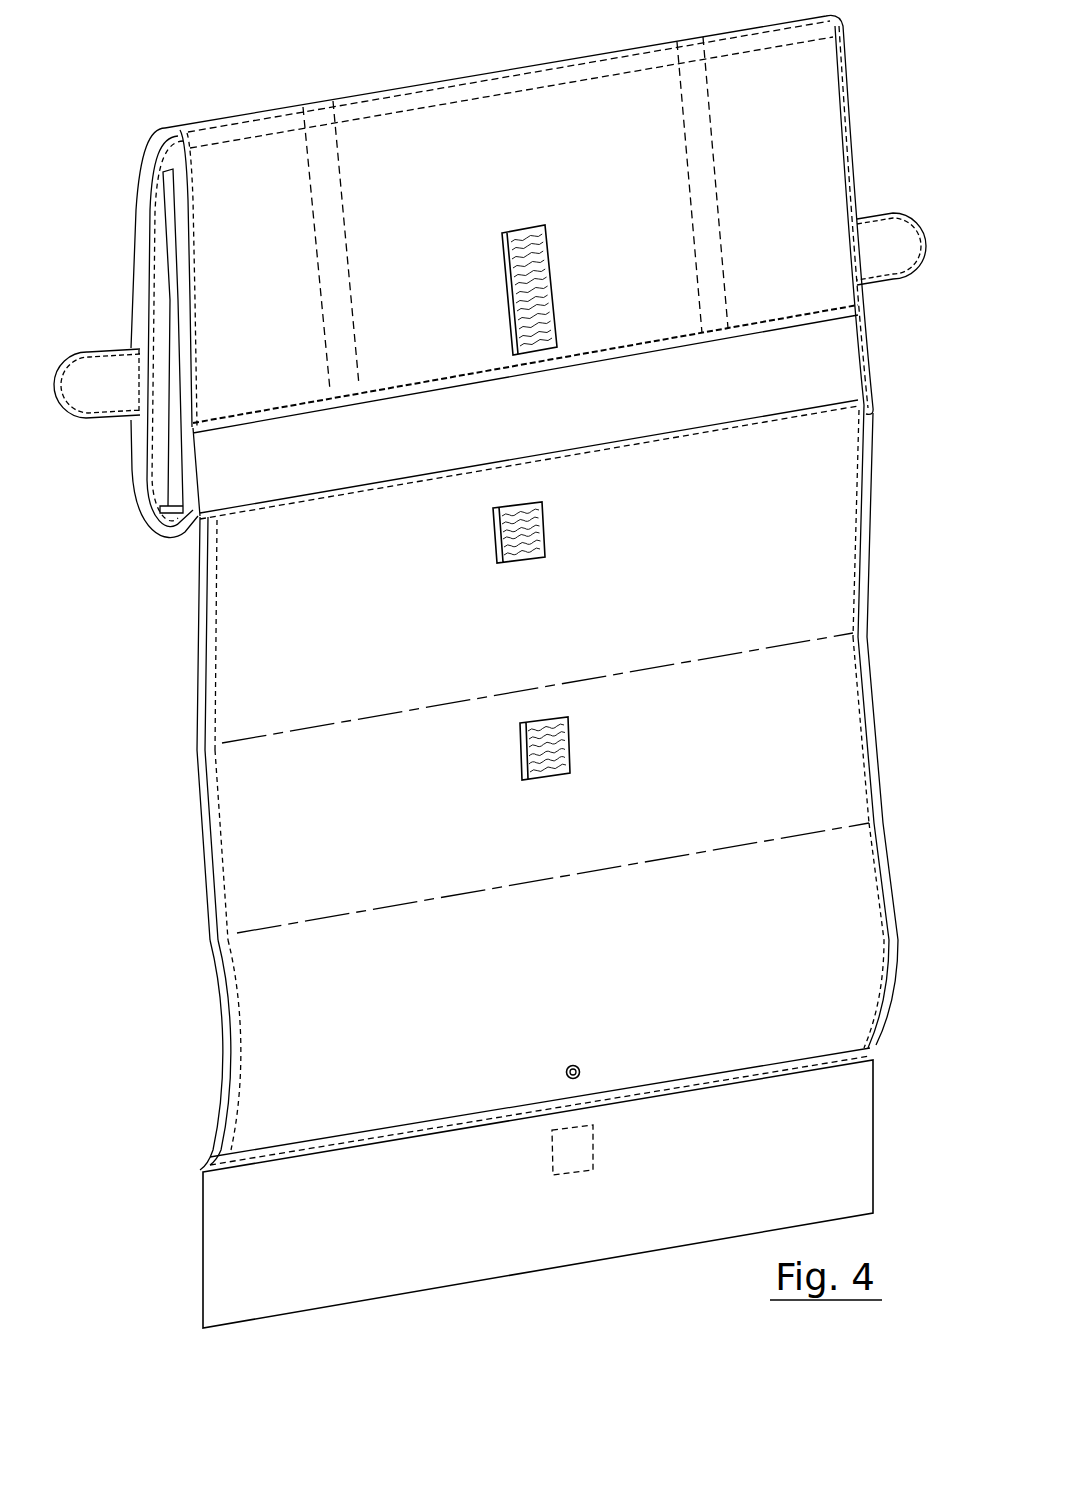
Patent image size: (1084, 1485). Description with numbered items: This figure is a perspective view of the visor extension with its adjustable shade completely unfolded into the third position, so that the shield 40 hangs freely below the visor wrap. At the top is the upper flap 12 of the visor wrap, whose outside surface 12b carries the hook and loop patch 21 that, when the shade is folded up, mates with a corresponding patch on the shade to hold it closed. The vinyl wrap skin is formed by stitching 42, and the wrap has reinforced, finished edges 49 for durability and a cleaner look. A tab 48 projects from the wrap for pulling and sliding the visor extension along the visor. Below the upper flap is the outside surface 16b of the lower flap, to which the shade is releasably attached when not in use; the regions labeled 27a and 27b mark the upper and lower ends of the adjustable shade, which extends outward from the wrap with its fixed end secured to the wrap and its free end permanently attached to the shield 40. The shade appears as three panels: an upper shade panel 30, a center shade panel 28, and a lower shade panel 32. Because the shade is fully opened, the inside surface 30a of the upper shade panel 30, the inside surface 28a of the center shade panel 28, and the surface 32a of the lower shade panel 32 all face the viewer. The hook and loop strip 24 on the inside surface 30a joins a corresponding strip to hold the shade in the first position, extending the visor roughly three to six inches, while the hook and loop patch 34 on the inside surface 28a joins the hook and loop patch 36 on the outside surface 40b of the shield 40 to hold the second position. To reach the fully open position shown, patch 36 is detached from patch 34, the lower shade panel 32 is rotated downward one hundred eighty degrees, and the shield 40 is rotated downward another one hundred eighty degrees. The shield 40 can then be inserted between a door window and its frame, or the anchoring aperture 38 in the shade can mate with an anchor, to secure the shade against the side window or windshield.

The upper flap 12 is at (850, 140).
The outside surface of the upper flap 12b is at (748, 158).
The stitching 42 is at (350, 152).
The hook and loop patch 21 is at (548, 262).
The outside surface of the lower flap 16b is at (746, 391).
The binding seam 27a is at (793, 413).
The tab 48 is at (93, 408).
The reinforced finished edges 49 is at (877, 512).
The upper shade panel 30 is at (263, 610).
The inside surface of the upper shade panel 30a is at (746, 594).
The center shade panel 28 is at (247, 808).
The inside surface of the middle shade panel 28a is at (748, 786).
The lower shade panel 32 is at (270, 1008).
The inner surface of third pocket panel 32a is at (746, 1001).
The hook and loop strip 24 is at (495, 538).
The hook and loop patch 34 is at (558, 750).
The anchoring aperture 38 is at (571, 1066).
The binding seam 27b is at (803, 1073).
The shield 40 is at (228, 1212).
The outside surface of the shield 40b is at (748, 1202).
The hook and loop patch 36 is at (552, 1158).